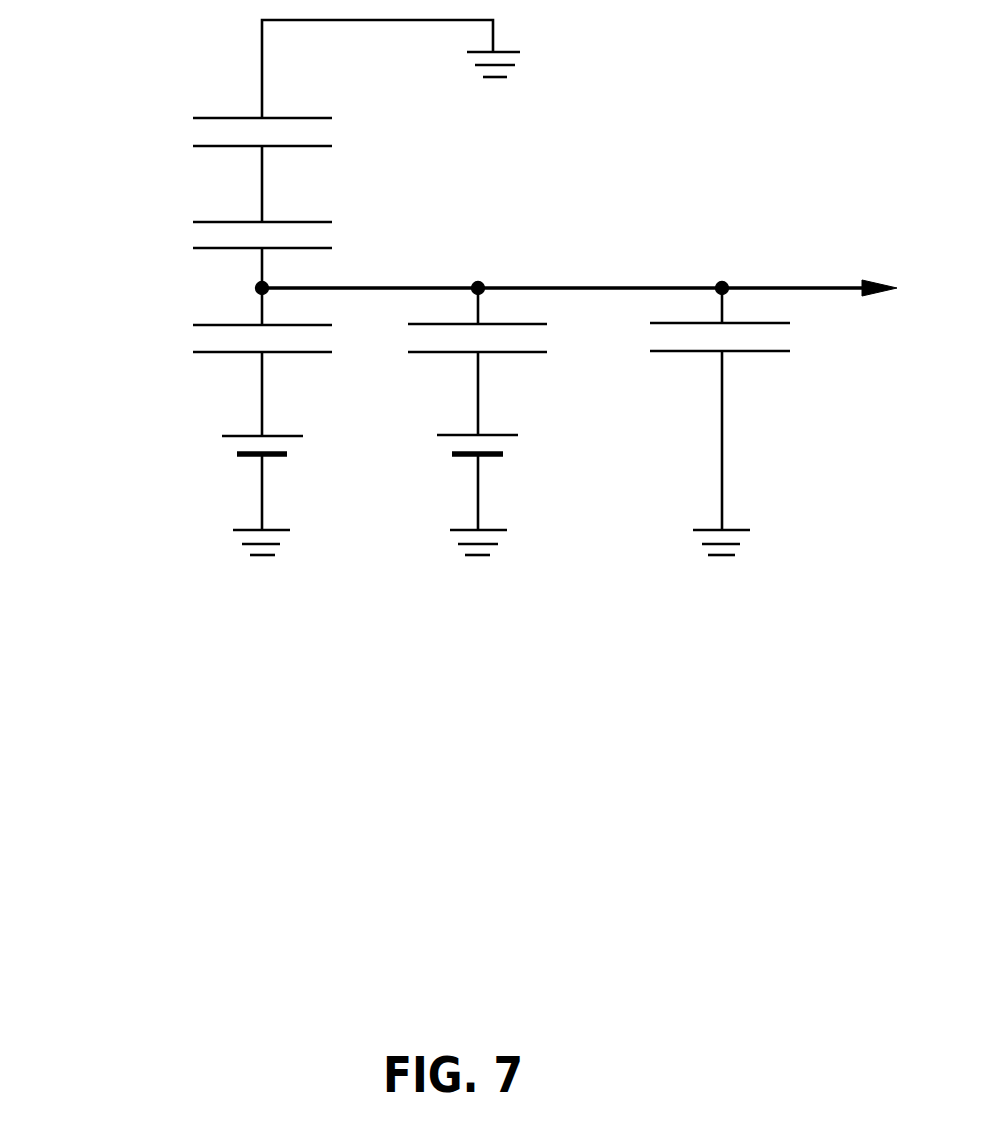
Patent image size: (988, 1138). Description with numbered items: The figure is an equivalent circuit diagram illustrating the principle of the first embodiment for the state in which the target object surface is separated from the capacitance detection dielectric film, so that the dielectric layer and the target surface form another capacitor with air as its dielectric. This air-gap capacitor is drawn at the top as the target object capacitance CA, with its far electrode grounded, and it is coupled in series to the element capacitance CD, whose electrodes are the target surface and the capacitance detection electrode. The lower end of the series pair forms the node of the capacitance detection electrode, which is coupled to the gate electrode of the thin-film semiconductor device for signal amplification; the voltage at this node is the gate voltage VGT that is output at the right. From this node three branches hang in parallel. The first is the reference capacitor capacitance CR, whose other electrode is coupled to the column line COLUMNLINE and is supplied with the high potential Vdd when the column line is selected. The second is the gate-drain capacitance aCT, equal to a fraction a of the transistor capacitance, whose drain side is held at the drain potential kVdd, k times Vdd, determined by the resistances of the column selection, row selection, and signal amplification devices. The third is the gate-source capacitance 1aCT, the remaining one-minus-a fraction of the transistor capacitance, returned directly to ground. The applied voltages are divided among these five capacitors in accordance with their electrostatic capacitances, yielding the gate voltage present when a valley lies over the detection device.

The target object capacitance CA is at (240, 169).
The element capacitance CD is at (240, 254).
The reference capacitor capacitance CR is at (240, 362).
The column line COLUMNLINE is at (257, 394).
The high potential supply voltage Vdd is at (285, 493).
The gate-drain capacitance aCT is at (511, 361).
The drain voltage k times Vdd kVdd is at (511, 493).
The gate-source capacitance 1aCT is at (772, 421).
The gate voltage VGT is at (577, 273).